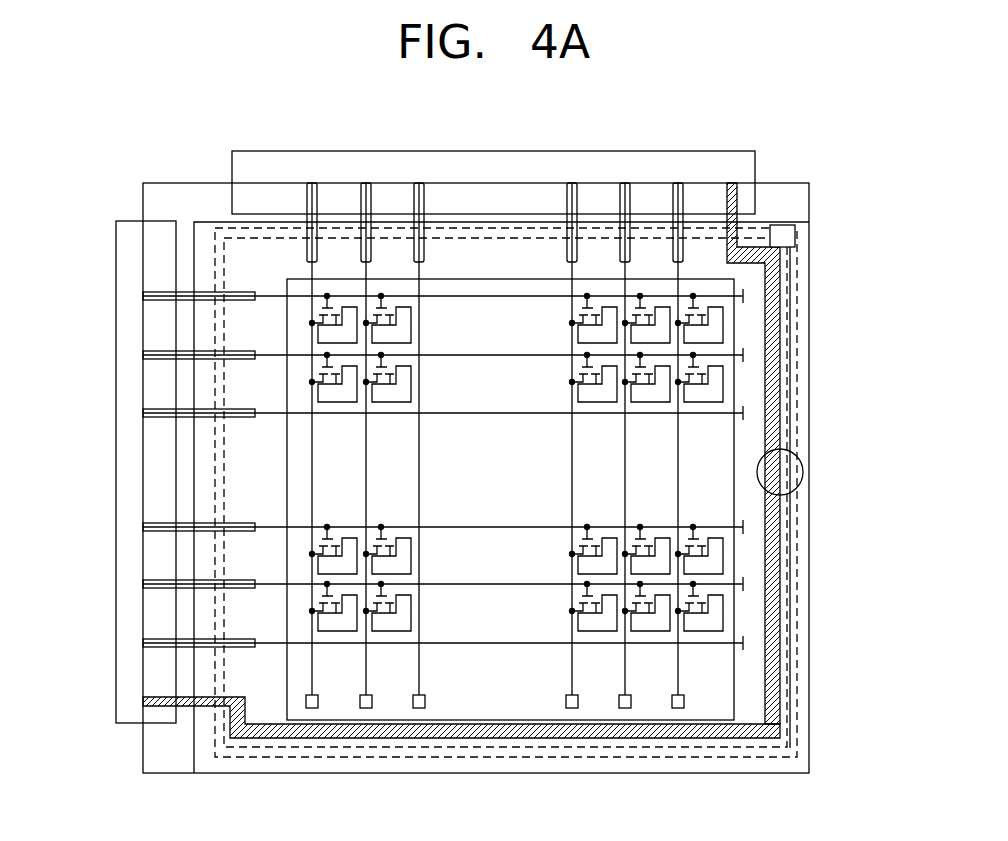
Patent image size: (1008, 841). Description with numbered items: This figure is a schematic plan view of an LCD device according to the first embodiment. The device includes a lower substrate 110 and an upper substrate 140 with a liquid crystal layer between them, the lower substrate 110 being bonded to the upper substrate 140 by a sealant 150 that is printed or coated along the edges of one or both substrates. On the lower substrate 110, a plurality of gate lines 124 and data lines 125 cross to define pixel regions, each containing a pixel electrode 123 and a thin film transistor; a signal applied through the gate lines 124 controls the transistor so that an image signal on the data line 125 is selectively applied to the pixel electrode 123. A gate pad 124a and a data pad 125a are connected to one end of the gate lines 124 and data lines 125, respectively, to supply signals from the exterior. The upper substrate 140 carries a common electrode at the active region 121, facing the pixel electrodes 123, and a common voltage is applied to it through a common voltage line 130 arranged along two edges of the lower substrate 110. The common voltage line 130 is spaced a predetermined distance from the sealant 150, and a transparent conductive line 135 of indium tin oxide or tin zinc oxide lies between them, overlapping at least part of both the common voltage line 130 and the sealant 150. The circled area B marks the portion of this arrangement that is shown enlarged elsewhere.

The lower substrate 110 is at (146, 750).
The active region 121 is at (260, 502).
The pixel electrode 123 is at (348, 306).
The gate line 124 is at (517, 295).
The gate pad 124a is at (163, 417).
The data line 125 is at (574, 262).
The data pad 125a is at (680, 203).
The common voltage line 130 is at (468, 738).
The conductive line 135 is at (394, 758).
The upper substrate 140 is at (778, 224).
The sealant 150 is at (797, 307).
The detail region B is at (803, 472).